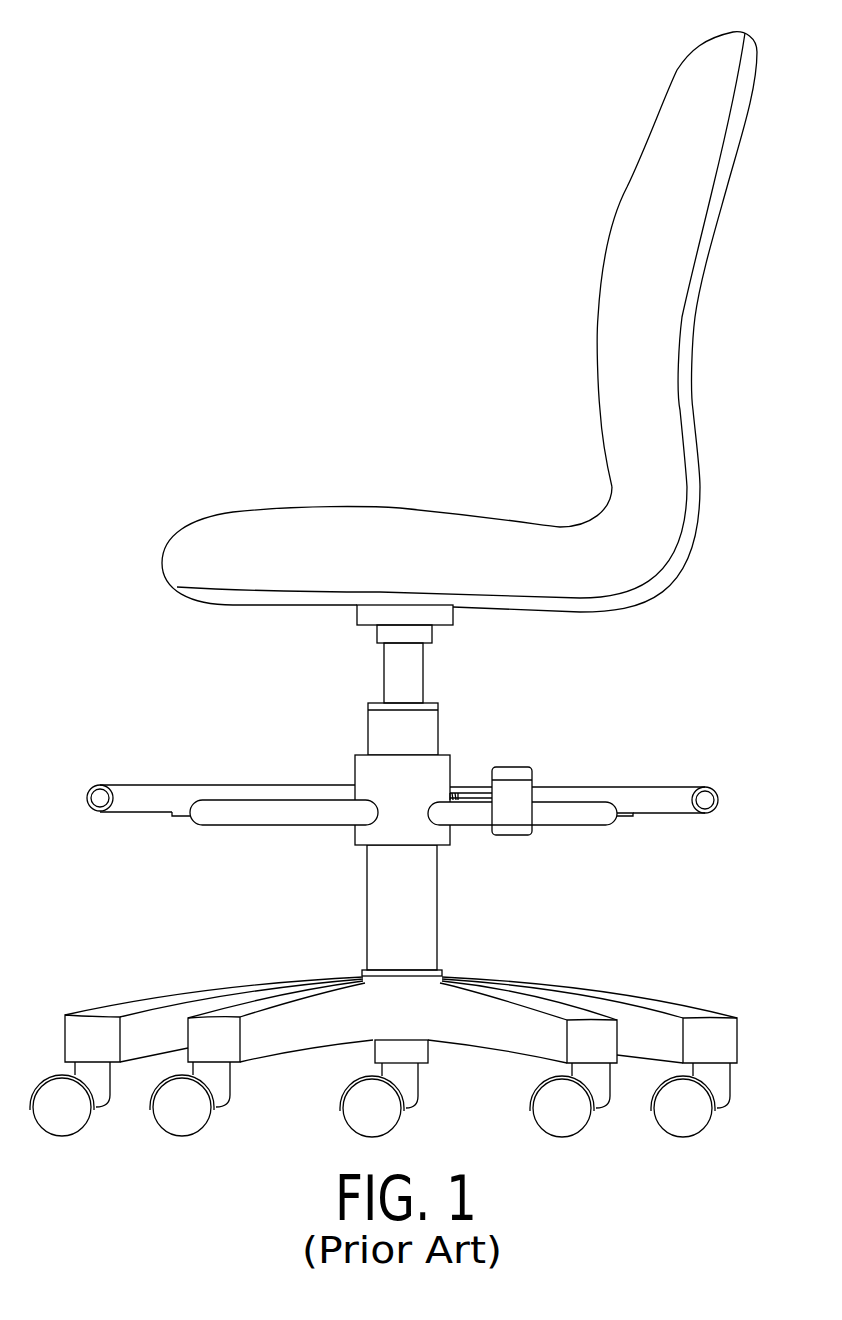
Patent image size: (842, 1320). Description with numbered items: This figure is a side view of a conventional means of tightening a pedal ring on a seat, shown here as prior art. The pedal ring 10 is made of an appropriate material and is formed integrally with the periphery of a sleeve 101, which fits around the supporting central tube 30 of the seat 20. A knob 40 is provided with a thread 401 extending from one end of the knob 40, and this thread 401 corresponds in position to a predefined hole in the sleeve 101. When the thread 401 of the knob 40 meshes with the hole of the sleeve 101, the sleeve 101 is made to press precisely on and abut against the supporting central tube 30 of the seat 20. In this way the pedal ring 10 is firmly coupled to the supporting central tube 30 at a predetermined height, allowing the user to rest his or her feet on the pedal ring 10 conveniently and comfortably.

The pedal ring 10 is at (668, 798).
The seat 20 is at (383, 528).
The supporting central tube 30 is at (405, 891).
The knob 40 is at (513, 773).
The sleeve 101 is at (438, 833).
The thread 401 is at (453, 793).